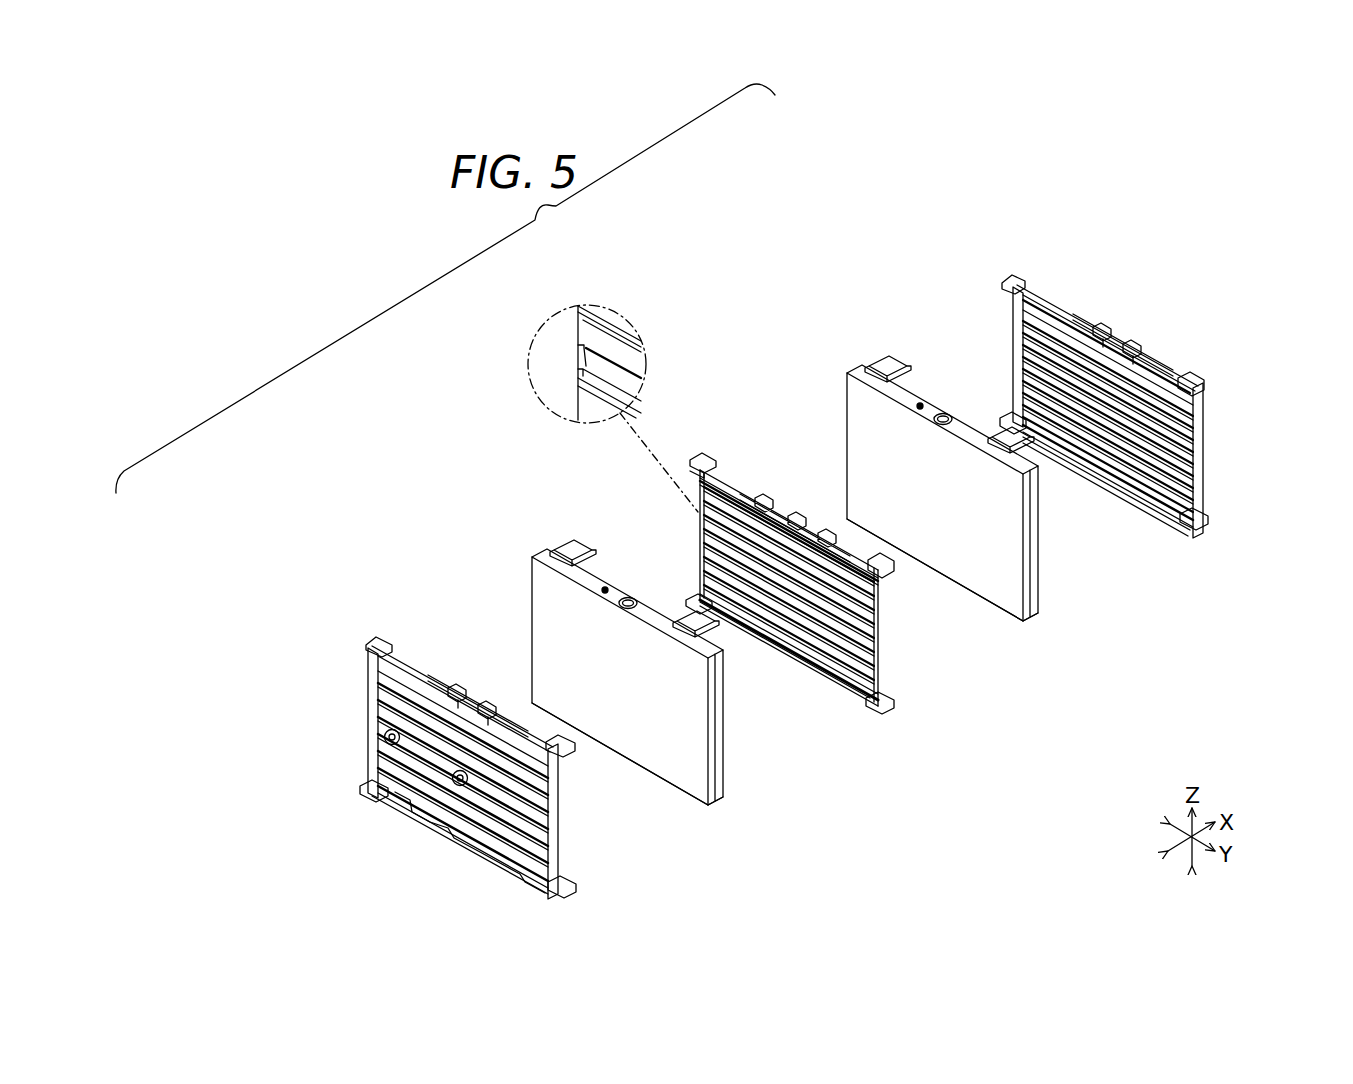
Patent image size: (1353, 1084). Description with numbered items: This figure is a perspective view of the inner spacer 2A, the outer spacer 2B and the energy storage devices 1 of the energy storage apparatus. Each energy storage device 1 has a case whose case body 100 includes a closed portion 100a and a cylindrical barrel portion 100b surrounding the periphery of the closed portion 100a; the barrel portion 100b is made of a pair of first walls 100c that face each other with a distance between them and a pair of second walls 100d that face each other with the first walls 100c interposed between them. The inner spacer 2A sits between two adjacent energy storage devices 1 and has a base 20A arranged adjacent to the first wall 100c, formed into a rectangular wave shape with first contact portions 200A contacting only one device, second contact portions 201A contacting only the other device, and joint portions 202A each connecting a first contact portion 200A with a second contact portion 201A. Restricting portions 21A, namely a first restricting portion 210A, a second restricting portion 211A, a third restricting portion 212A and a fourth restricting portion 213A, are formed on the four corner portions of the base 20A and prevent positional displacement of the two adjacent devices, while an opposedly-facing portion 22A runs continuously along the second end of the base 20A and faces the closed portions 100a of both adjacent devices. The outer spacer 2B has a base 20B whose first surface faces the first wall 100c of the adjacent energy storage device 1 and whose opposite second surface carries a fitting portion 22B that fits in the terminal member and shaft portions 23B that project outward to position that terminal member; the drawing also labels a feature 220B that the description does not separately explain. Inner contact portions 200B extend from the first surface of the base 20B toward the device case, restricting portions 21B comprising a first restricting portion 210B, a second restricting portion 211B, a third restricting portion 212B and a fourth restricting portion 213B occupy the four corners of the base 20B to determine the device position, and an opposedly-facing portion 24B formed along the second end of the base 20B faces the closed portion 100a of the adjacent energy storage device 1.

The energy storage device 1 is at (535, 546).
The case body 100 is at (524, 583).
The closed portion 100a is at (660, 768).
The barrel portion 100b is at (818, 752).
The first walls 100c is at (690, 778).
The second walls 100d is at (710, 740).
The inner spacer 2A is at (732, 443).
The outer spacer 2B is at (430, 642).
The base 20A is at (424, 320).
The first contact portions 200A is at (578, 354).
The second contact portions 201A is at (587, 395).
The joint portions 202A is at (589, 368).
The base 20B is at (378, 744).
The inner contact portions 200B is at (1020, 350).
The restricting portions 21A is at (786, 557).
The first restricting portion 210A is at (699, 450).
The second restricting portion 211A is at (890, 580).
The third restricting portion 212A is at (688, 583).
The fourth restricting portion 213A is at (896, 715).
The restricting portions 21B is at (764, 559).
The first restricting portion 210B is at (387, 632).
The second restricting portion 211B is at (562, 764).
The third restricting portion 212B is at (1010, 414).
The fourth restricting portion 213B is at (576, 890).
The opposedly-facing portion 22A is at (812, 672).
The fitting portion 22B is at (427, 842).
The bottom wall portion of second separator 220B is at (462, 852).
The shaft portions 23B is at (402, 812).
The opposedly-facing portion 24B is at (1090, 492).